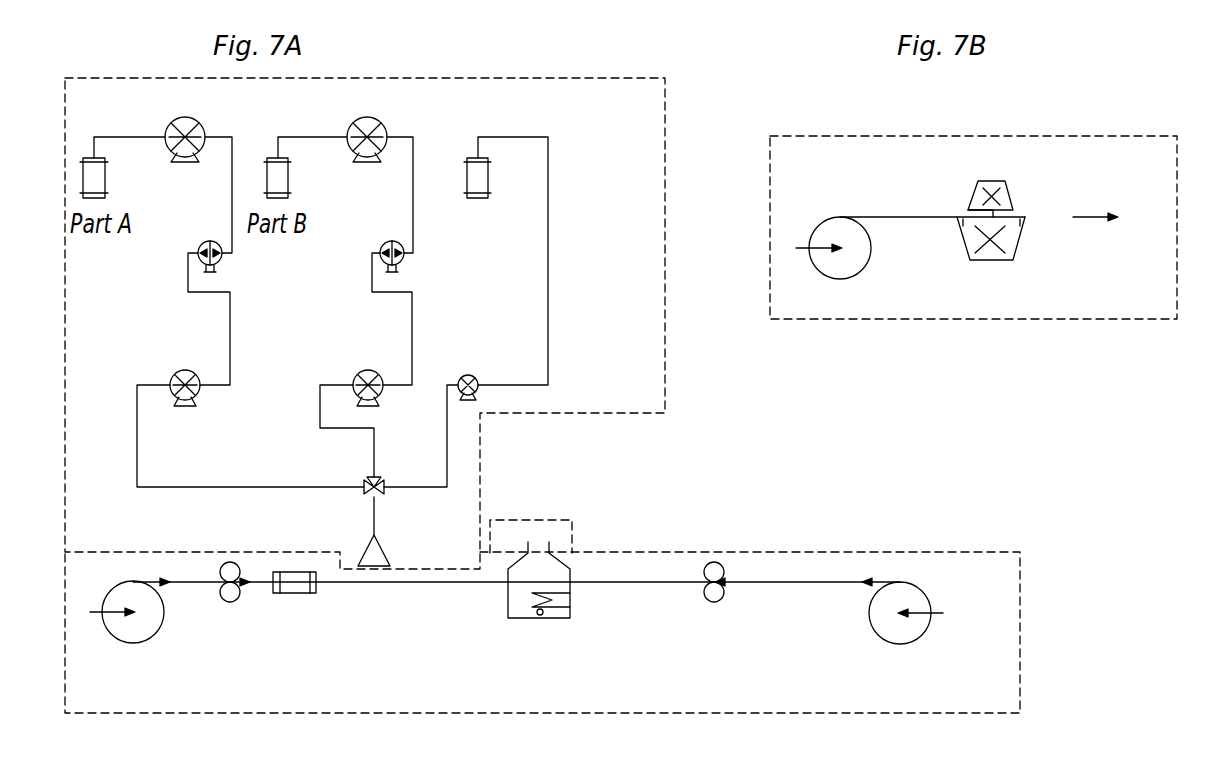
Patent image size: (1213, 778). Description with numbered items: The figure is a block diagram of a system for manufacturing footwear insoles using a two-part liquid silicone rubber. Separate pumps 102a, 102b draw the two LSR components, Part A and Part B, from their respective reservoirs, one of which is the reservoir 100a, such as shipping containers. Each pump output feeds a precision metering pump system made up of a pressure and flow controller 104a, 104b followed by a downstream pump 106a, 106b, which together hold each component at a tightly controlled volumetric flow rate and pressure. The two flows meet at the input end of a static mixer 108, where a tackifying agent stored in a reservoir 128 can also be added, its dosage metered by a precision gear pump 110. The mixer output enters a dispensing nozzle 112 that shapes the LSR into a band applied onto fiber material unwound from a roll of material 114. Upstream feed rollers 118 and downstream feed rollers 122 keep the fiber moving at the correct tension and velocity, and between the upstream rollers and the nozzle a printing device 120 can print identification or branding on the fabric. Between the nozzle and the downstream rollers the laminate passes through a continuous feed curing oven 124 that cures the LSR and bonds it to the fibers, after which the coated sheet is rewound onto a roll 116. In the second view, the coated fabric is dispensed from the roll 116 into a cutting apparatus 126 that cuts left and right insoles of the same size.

In FIG. 7A, the reservoir 100a is at (105, 185).
In FIG. 7A, the pump 102a is at (198, 124).
In FIG. 7A, the pump 102b is at (380, 124).
In FIG. 7A, the pressure and flow controller 104a is at (218, 263).
In FIG. 7A, the pressure and flow controller 104b is at (400, 263).
In FIG. 7A, the pump 106a is at (195, 372).
In FIG. 7A, the pump 106b is at (378, 372).
In FIG. 7A, the static mixer 108 is at (408, 500).
In FIG. 7A, the precision gear pump 110 is at (472, 376).
In FIG. 7A, the dispensing nozzle 112 is at (383, 553).
In FIG. 7A, the roll of material 114 is at (155, 635).
In FIG. 7A, the roll 116 is at (922, 638).
In FIG. 7B, the roll 116 is at (845, 280).
In FIG. 7A, the feed rollers 118 is at (222, 578).
In FIG. 7A, the printing device 120 is at (293, 593).
In FIG. 7A, the feed rollers 122 is at (722, 567).
In FIG. 7A, the continuous feed curing oven 124 is at (568, 560).
In FIG. 7B, the cutting apparatus 126 is at (1010, 190).
In FIG. 7A, the reservoir 128 is at (488, 178).